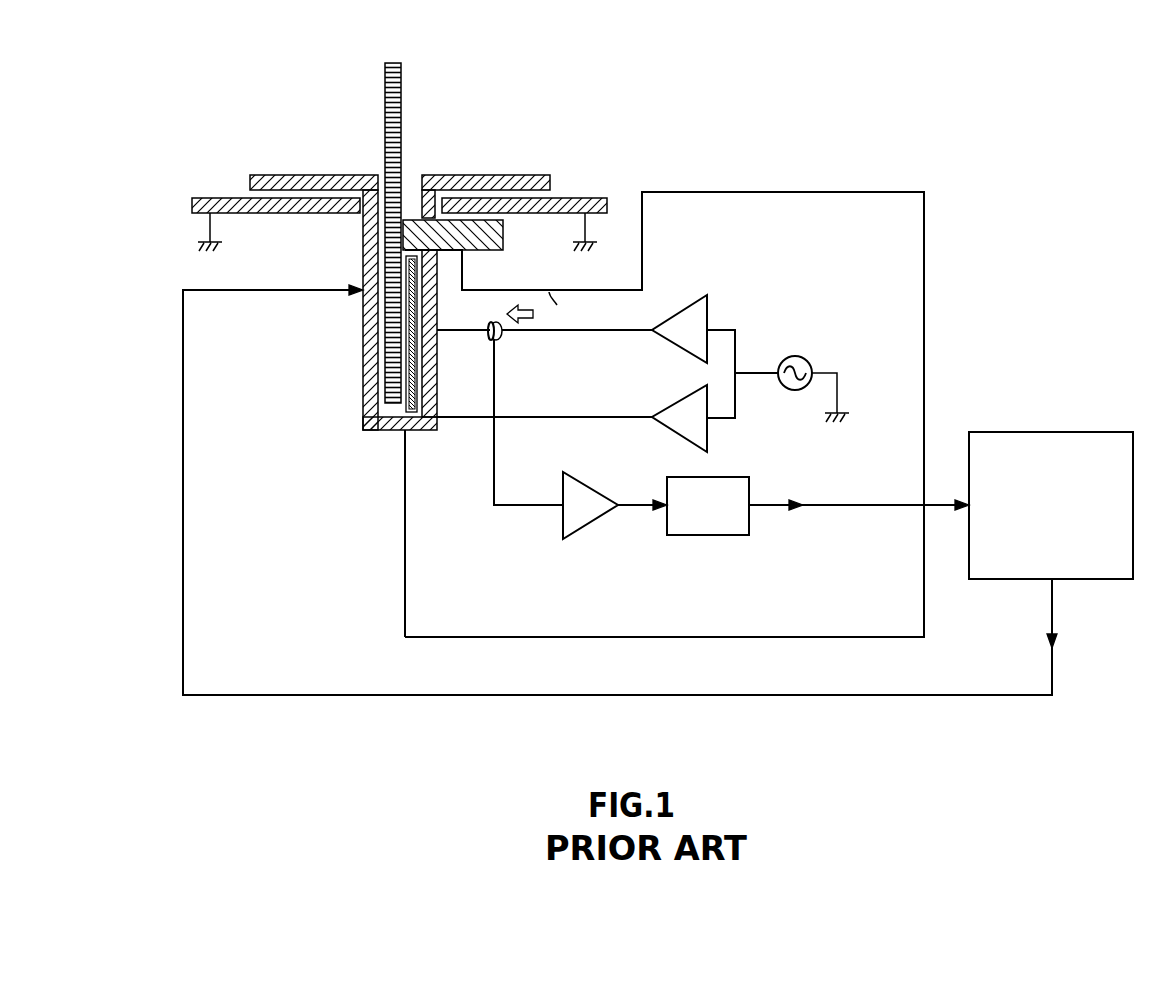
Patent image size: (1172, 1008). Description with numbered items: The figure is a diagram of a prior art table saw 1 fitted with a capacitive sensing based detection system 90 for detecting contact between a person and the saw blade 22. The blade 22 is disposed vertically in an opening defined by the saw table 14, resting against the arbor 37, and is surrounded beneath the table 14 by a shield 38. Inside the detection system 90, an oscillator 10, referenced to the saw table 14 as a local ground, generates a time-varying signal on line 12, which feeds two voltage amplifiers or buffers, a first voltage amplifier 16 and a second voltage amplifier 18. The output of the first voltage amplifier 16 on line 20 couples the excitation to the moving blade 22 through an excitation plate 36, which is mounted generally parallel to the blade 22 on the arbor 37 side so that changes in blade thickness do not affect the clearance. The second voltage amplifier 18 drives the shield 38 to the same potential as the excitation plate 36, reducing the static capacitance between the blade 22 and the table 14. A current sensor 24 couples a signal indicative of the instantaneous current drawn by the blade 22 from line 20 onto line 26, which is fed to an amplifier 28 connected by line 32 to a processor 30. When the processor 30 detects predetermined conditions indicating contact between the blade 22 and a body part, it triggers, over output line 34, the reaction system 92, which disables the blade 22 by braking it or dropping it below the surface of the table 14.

The table saw 1 is at (694, 115).
The oscillator 10 is at (808, 358).
The line 12 is at (737, 345).
The saw table 14 is at (216, 198).
The first voltage amplifier 16 is at (709, 310).
The second voltage amplifier 18 is at (709, 437).
The line 20 is at (588, 331).
The blade 22 is at (389, 408).
The current sensor 24 is at (503, 338).
The line 26 is at (524, 507).
The amplifier 28 is at (593, 521).
The processor 30 is at (718, 536).
The line 32 is at (633, 508).
The output line 34 is at (824, 504).
The excitation plate 36 is at (413, 410).
The arbor 37 is at (478, 250).
The shield 38 is at (363, 373).
The detection system 90 is at (851, 192).
The reaction system 92 is at (1041, 432).